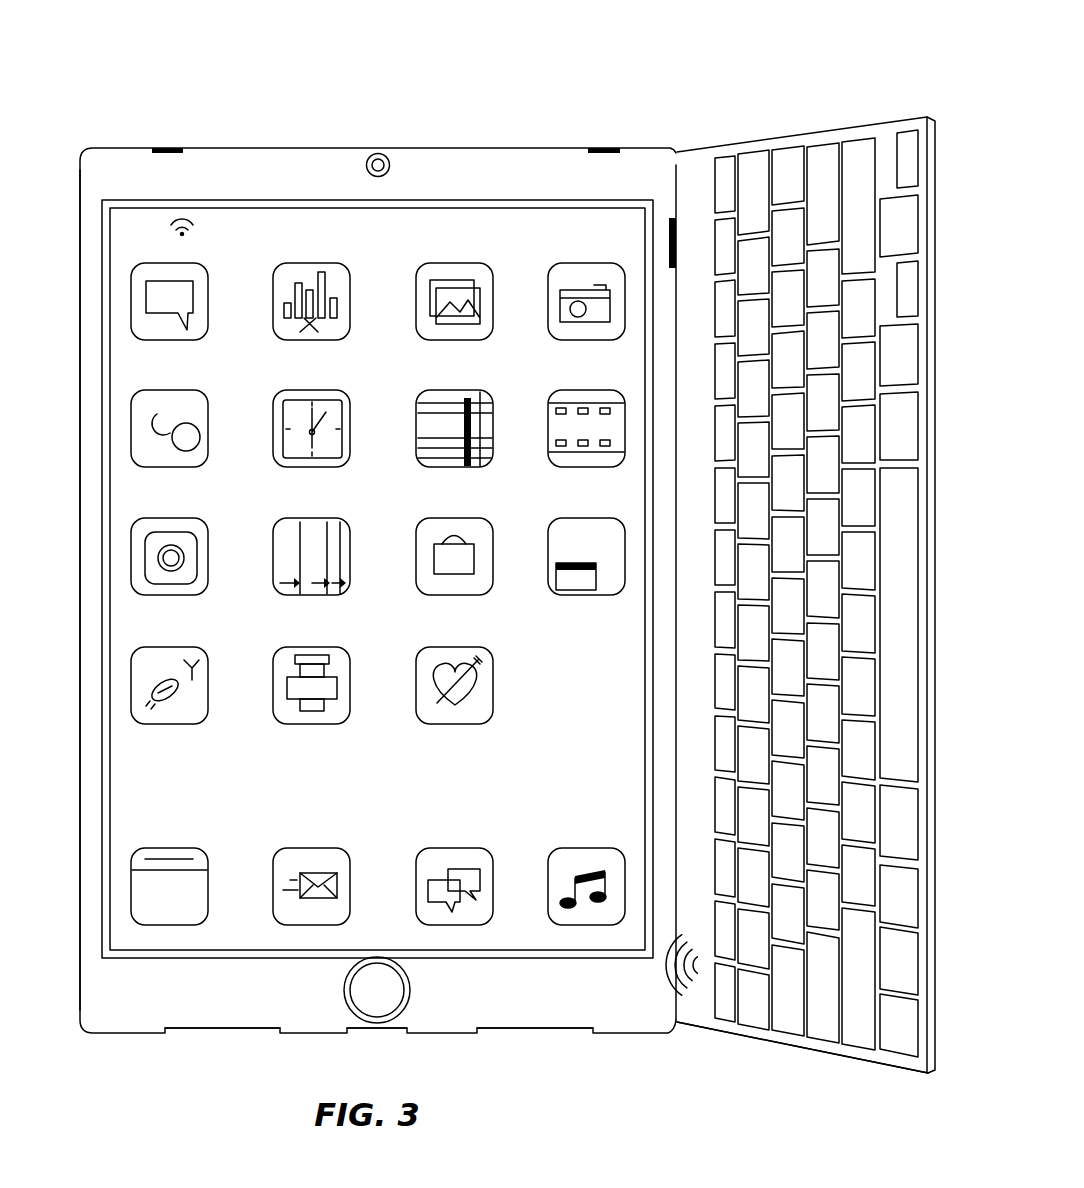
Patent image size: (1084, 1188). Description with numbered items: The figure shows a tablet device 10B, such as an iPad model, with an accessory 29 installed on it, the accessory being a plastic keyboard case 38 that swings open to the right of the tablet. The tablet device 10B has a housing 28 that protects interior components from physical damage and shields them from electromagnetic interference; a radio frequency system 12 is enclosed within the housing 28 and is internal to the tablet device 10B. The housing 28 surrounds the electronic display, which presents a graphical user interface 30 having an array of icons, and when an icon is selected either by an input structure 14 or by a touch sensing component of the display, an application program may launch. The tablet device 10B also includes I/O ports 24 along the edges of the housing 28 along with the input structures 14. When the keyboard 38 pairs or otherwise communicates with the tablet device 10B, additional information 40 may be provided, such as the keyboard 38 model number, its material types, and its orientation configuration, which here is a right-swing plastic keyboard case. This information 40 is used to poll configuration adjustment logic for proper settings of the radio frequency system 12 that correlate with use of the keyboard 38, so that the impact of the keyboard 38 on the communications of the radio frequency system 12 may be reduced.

The tablet device 10B is at (95, 122).
The radio frequency system 12 is at (102, 733).
The input structures 14 is at (600, 149).
The I/O ports 24 is at (165, 148).
The housing 28 is at (80, 542).
The accessory 29 is at (80, 497).
The graphical user interface 30 is at (122, 778).
The plastic keyboard case 38 is at (802, 1054).
The additional information 40 is at (493, 131).